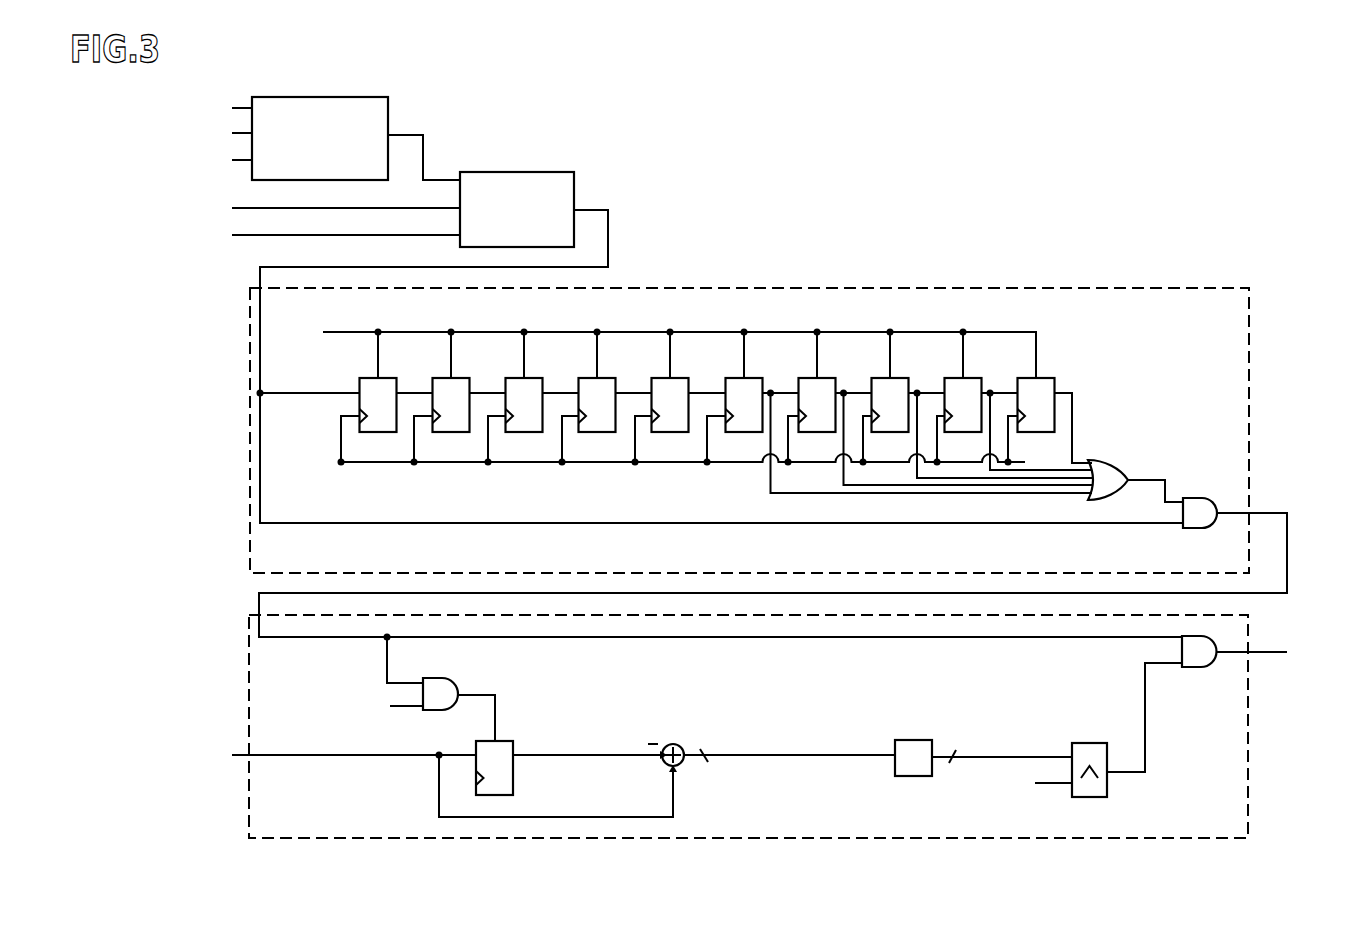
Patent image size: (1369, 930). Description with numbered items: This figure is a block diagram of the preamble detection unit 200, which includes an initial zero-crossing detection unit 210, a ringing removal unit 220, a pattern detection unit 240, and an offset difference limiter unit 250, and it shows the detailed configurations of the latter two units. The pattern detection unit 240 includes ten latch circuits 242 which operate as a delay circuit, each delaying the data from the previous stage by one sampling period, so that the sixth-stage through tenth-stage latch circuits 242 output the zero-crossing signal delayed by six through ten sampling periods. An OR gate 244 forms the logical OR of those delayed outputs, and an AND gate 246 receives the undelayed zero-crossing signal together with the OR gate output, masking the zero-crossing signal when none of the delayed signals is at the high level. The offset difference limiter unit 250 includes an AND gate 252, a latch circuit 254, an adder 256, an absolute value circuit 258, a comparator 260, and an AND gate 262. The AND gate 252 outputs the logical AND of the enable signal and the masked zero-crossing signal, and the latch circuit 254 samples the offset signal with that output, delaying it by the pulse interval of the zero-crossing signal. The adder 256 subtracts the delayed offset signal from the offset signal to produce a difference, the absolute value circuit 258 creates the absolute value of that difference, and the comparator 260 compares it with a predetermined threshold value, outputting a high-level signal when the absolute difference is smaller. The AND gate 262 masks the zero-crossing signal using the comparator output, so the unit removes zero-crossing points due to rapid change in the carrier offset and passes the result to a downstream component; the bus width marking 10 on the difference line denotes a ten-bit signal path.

The preamble detection unit 200 is at (759, 880).
The initial zero-crossing detection unit 210 is at (329, 97).
The ringing removal unit 220 is at (518, 172).
The pattern detection unit 240 is at (1249, 306).
The latch circuits 242 is at (362, 378).
The OR gate 244 is at (1101, 460).
The AND gate 246 is at (1196, 528).
The offset difference limiter unit 250 is at (1249, 831).
The AND gate 252 is at (441, 678).
The latch circuit 254 is at (513, 741).
The adder 256 is at (676, 744).
The absolute value circuit 258 is at (916, 740).
The comparator 260 is at (1090, 743).
The AND gate 262 is at (1196, 667).
The bus width 10 is at (703, 747).